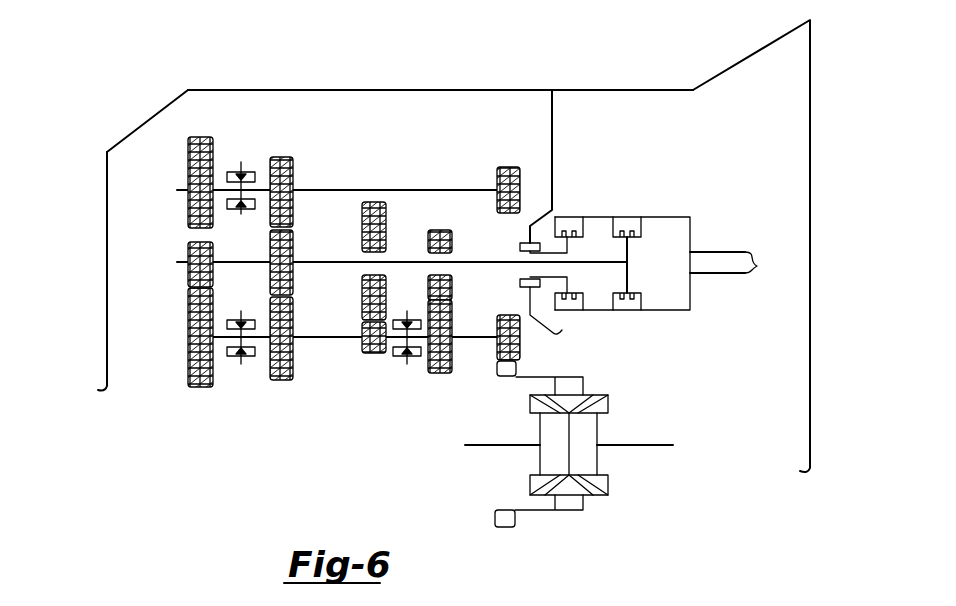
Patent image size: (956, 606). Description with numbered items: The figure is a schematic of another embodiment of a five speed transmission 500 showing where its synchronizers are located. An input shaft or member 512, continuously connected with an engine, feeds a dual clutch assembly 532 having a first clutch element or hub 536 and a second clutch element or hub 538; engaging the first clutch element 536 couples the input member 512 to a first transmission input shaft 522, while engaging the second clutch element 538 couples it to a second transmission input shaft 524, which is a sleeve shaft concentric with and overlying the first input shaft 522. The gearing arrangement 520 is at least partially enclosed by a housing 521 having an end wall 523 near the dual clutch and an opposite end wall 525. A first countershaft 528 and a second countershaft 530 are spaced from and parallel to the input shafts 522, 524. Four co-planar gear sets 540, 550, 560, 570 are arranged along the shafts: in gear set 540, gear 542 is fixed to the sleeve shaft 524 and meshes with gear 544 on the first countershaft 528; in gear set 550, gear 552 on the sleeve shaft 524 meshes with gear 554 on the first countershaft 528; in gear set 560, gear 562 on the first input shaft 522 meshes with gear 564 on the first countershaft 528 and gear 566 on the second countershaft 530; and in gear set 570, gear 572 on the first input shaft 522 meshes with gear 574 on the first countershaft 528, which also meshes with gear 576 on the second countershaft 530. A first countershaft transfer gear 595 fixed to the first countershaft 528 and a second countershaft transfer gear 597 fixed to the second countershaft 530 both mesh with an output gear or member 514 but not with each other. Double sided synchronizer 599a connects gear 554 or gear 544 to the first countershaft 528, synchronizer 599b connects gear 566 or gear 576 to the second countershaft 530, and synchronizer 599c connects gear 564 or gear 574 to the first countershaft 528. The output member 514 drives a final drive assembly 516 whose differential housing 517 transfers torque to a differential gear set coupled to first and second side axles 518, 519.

The multiple speed transmission 500 is at (445, 238).
The input shaft or member 512 is at (745, 251).
The output gear or member 514 is at (518, 367).
The final drive assembly 516 is at (597, 452).
The differential housing 517 is at (584, 502).
The first side axle 518 is at (655, 450).
The second side axle 519 is at (483, 450).
The gearing arrangement 520 is at (140, 108).
The housing 521 is at (603, 88).
The first transmission input shaft or member 522 is at (320, 259).
The end wall 523 is at (553, 115).
The second transmission input shaft or member 524 is at (408, 256).
The end wall 525 is at (97, 166).
The first countershaft 528 is at (320, 336).
The second countershaft 530 is at (473, 189).
The dual clutch assembly 532 is at (658, 227).
The first clutch element or hub 536 is at (627, 282).
The second clutch element or hub 538 is at (568, 249).
The co-planar gear set 540 is at (457, 331).
The gear 542 is at (441, 228).
The gear 544 is at (452, 352).
The co-planar gear set 550 is at (352, 309).
The gear 552 is at (373, 200).
The gear 554 is at (362, 350).
The co-planar gear set 560 is at (285, 320).
The gear 562 is at (270, 255).
The gear 564 is at (293, 370).
The gear 566 is at (293, 173).
The co-planar gear set 570 is at (170, 285).
The gear 572 is at (188, 255).
The gear 574 is at (188, 335).
The gear 576 is at (188, 160).
The first countershaft transfer gear 595 is at (519, 353).
The second countershaft transfer gear 597 is at (505, 166).
The synchronizer assembly 599a is at (413, 372).
The synchronizer assembly 599b is at (232, 165).
The synchronizer assembly 599c is at (242, 366).